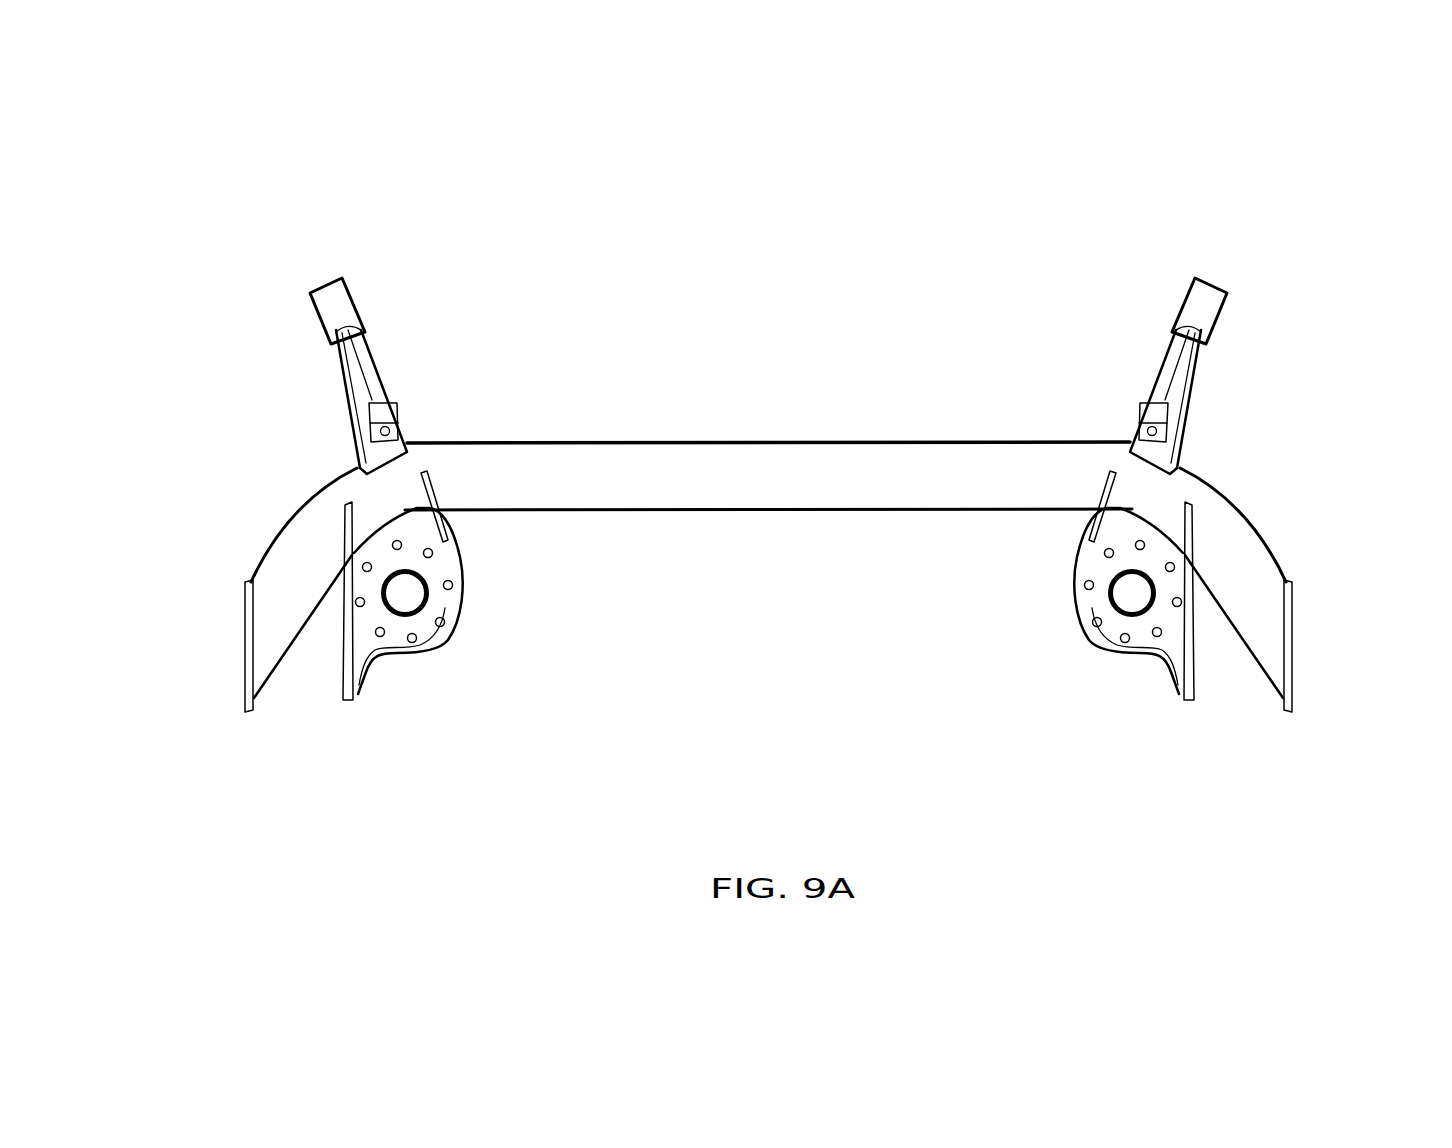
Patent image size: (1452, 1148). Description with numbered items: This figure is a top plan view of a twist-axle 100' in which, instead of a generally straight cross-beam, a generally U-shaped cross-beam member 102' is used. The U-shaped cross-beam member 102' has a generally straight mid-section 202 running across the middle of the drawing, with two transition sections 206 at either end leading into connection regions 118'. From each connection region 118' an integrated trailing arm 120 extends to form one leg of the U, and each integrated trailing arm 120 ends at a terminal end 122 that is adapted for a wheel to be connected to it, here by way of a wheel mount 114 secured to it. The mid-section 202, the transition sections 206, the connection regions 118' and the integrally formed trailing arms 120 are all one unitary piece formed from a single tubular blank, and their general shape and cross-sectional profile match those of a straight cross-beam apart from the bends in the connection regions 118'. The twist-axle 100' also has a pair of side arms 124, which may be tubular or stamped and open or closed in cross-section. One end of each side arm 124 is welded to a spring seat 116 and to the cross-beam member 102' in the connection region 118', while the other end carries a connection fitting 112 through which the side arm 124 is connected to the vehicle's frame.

The twist-axle 100' is at (783, 464).
The U-shaped cross-beam member 102' is at (768, 464).
The connection fitting 112 is at (340, 298).
The wheel mount 114 is at (250, 638).
The spring seat 116 is at (440, 603).
The connection region 118' is at (780, 456).
The integrated trailing arm 120 is at (297, 567).
The terminal end 122 is at (262, 663).
The side arm 124 is at (363, 373).
The mid-section 202 is at (745, 462).
The transition section 206 is at (488, 487).